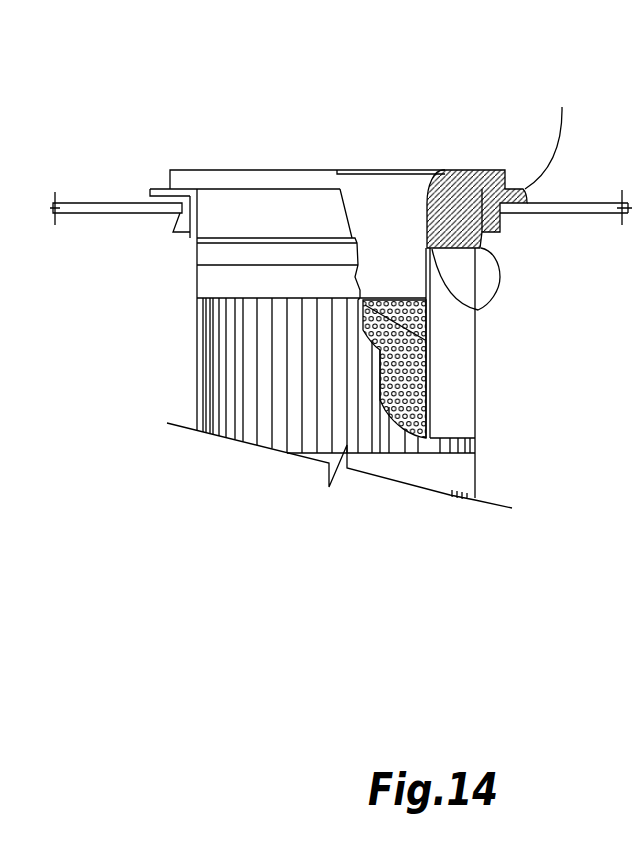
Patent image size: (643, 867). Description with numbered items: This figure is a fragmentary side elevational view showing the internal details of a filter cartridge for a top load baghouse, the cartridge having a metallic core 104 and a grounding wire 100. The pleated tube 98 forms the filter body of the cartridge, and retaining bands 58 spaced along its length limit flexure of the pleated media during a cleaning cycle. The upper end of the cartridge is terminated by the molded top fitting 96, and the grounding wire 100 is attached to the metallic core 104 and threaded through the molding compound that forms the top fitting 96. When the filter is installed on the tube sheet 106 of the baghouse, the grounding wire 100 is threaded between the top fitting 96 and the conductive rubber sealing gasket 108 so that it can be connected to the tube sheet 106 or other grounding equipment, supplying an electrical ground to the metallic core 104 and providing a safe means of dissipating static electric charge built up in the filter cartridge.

The retaining bands 58 is at (450, 472).
The top fitting 96 is at (280, 178).
The pleated tube 98 is at (233, 375).
The grounding wire 100 is at (558, 130).
The metallic core 104 is at (428, 384).
The tube sheet 106 is at (113, 207).
The conductive rubber sealing gasket 108 is at (187, 215).